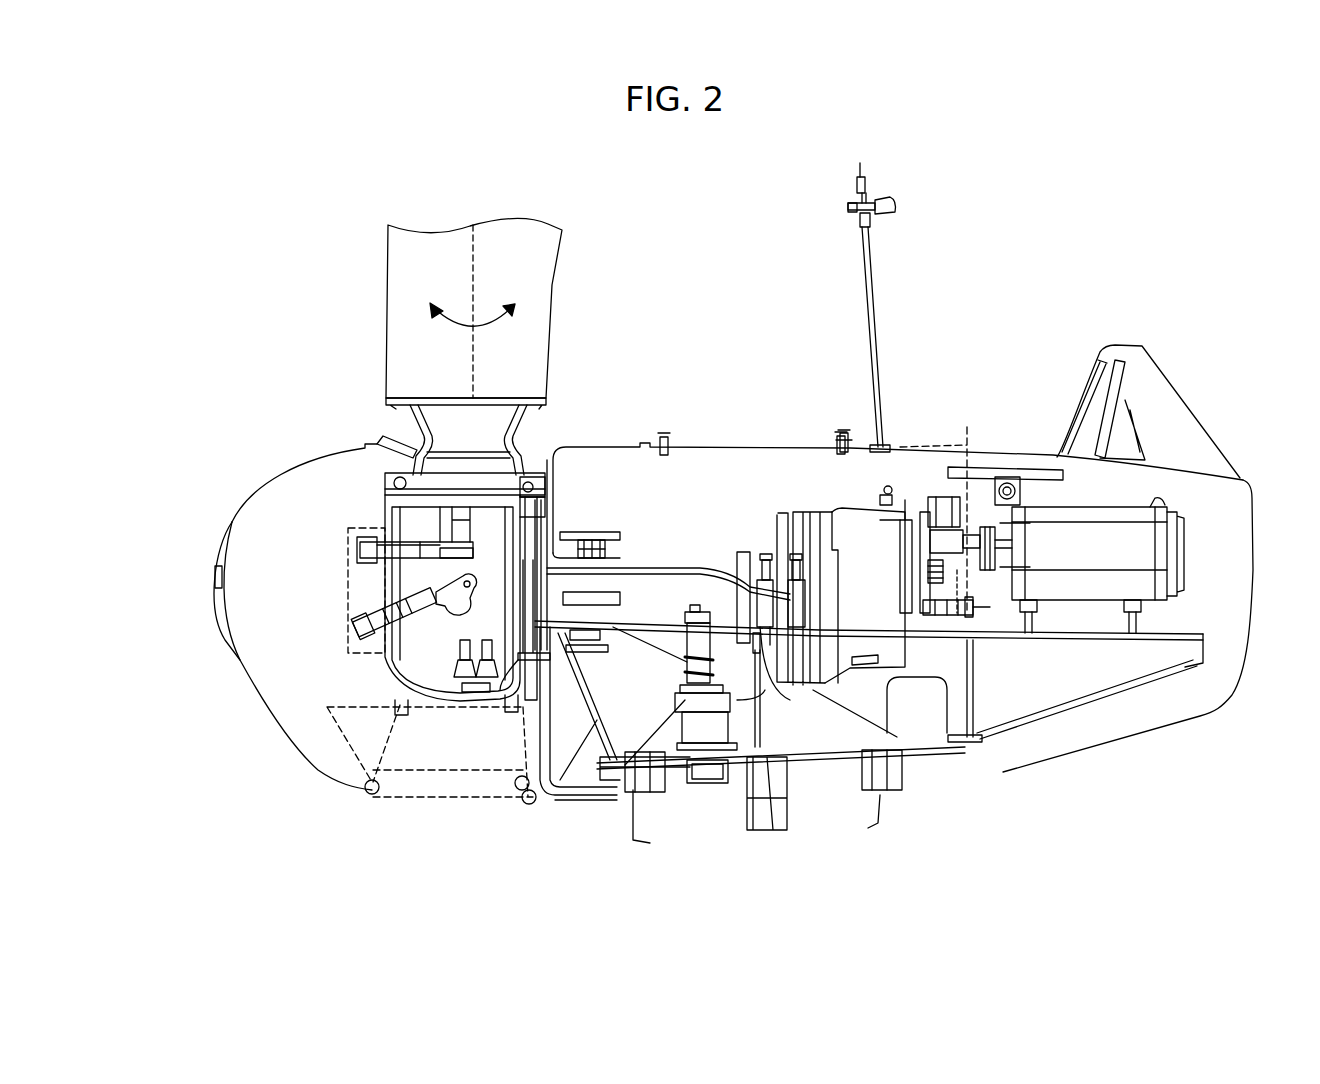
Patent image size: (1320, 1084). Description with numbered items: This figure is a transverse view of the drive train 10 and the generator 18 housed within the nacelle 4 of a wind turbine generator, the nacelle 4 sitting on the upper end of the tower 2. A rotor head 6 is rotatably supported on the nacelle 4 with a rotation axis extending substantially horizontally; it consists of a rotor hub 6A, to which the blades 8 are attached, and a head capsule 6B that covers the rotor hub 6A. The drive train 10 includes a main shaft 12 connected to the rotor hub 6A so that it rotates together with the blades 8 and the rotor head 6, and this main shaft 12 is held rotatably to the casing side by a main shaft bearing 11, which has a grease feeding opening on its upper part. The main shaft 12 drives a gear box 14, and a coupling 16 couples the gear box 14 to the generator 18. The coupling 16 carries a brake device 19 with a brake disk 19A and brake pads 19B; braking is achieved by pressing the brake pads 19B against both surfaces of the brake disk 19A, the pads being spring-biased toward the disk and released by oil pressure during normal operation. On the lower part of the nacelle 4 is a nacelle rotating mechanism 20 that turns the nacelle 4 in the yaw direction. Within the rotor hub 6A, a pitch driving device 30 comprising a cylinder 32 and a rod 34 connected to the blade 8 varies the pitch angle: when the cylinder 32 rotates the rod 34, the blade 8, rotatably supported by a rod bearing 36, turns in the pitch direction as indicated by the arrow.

The tower 2 is at (892, 815).
The nacelle 4 is at (1010, 449).
The rotor head 6 is at (200, 524).
The rotor hub 6A is at (385, 679).
The head capsule 6B is at (320, 763).
The blade 8 is at (400, 283).
The drive train 10 is at (722, 446).
The main shaft bearing 11 is at (615, 547).
The main shaft 12 is at (650, 562).
The gear box 14 is at (850, 515).
The coupling 16 is at (910, 388).
The generator 18 is at (1130, 520).
The brake device 19 is at (951, 566).
The brake disk 19A is at (928, 512).
The brake pads 19B is at (952, 616).
The nacelle rotating mechanism 20 is at (702, 810).
The pitch driving device 30 is at (349, 462).
The cylinder 32 is at (400, 542).
The rod 34 is at (472, 520).
The rod bearing 36 is at (395, 465).